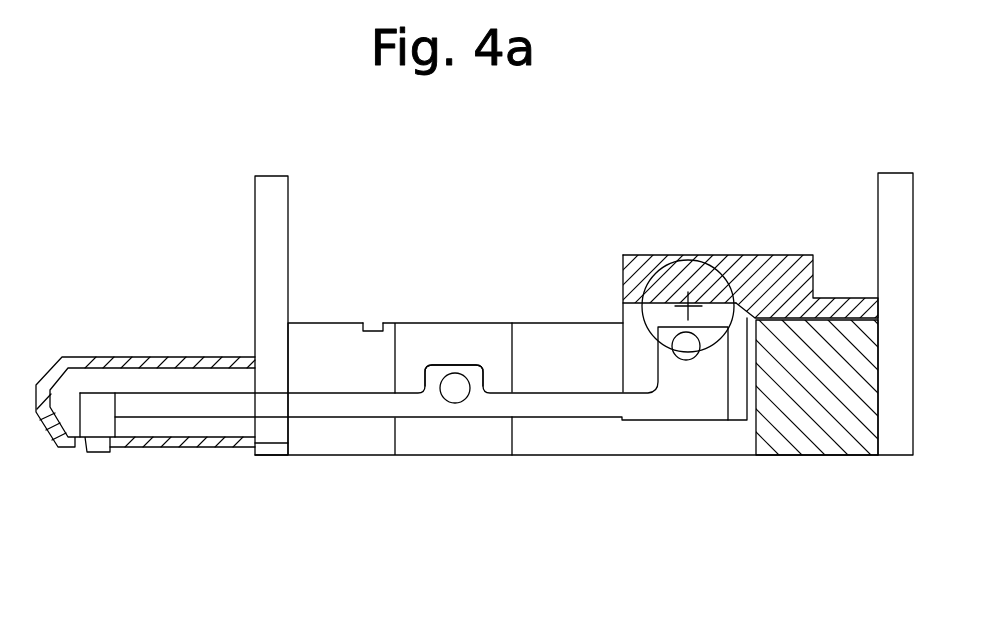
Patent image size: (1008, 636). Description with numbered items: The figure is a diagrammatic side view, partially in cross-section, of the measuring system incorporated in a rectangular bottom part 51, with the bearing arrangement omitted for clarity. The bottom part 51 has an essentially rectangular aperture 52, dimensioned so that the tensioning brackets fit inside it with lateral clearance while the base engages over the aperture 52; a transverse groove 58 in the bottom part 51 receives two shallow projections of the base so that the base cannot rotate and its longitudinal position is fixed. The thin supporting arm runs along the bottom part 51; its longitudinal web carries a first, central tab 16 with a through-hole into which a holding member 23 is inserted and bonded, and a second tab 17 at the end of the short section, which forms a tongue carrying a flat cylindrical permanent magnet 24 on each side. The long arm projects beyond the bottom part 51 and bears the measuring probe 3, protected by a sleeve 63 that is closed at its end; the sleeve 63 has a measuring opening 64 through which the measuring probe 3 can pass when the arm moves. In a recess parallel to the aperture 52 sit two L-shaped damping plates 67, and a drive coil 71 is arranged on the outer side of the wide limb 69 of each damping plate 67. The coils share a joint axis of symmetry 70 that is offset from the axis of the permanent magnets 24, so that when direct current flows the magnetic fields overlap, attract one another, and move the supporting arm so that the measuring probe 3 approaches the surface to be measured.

The measuring probe 3 is at (90, 427).
The first tab 16 is at (443, 365).
The second tab 17 is at (711, 388).
The holding member 23 is at (452, 396).
The permanent magnet 24 is at (683, 362).
The bottom part 51 is at (604, 455).
The aperture 52 is at (420, 323).
The transverse groove 58 is at (371, 323).
The sleeve 63 is at (127, 357).
The measuring opening 64 is at (120, 450).
The damping plate 67 is at (770, 255).
The wide limb 69 is at (620, 342).
The joint axis of symmetry 70 is at (690, 303).
The drive coil 71 is at (647, 255).